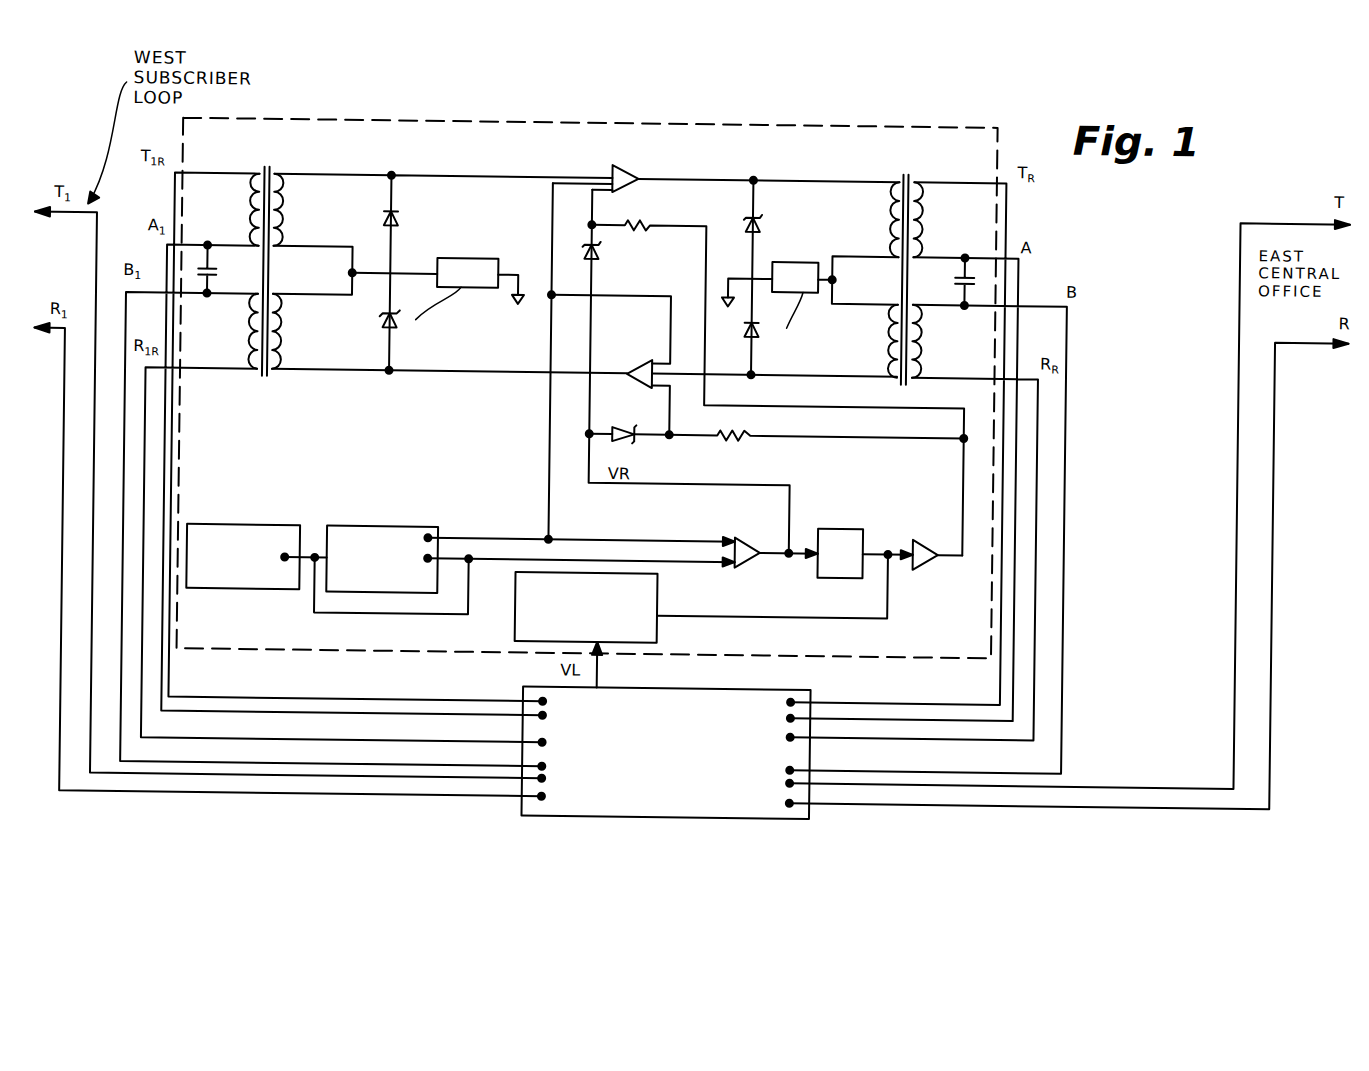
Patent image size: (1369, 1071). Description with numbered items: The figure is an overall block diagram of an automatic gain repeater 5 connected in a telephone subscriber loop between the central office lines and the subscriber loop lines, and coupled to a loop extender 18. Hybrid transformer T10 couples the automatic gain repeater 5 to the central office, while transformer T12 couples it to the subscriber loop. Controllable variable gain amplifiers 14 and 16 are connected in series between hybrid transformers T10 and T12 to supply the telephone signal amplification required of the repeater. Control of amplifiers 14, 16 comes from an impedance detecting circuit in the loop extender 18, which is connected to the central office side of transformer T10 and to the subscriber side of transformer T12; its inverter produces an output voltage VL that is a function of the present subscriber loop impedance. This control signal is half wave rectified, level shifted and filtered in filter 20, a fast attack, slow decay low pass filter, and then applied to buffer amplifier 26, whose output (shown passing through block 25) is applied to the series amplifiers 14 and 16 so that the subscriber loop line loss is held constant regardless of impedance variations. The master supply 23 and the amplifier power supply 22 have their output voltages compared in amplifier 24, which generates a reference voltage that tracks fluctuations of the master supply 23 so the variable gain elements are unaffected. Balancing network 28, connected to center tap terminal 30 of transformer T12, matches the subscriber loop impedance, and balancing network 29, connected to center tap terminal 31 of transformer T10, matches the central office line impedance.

The automatic gain repeater 5 is at (996, 145).
The controllable variable gain amplifier 14 is at (637, 167).
The controllable variable gain amplifier 16 is at (630, 365).
The loop extender 18 is at (810, 684).
The filter 20 is at (658, 598).
The amplifier power supply 22 is at (441, 513).
The master supply 23 is at (301, 519).
The amplifier 24 is at (772, 530).
The block 25 is at (876, 513).
The buffer amplifier 26 is at (941, 525).
The balancing network 28 is at (523, 240).
The balancing network 29 is at (794, 261).
The center tap terminal 30 is at (350, 276).
The center tap terminal 31 is at (832, 278).
The transformer T12 is at (272, 176).
The hybrid transformer T10 is at (900, 165).